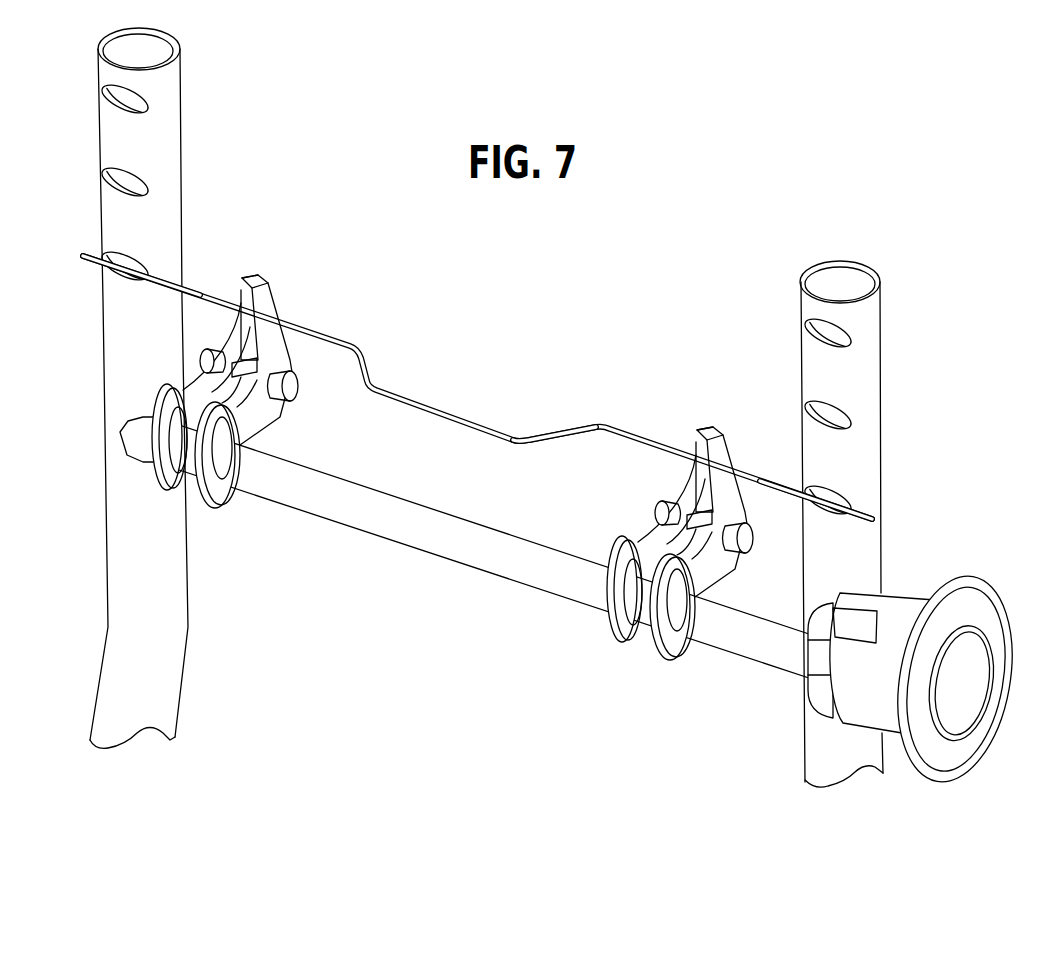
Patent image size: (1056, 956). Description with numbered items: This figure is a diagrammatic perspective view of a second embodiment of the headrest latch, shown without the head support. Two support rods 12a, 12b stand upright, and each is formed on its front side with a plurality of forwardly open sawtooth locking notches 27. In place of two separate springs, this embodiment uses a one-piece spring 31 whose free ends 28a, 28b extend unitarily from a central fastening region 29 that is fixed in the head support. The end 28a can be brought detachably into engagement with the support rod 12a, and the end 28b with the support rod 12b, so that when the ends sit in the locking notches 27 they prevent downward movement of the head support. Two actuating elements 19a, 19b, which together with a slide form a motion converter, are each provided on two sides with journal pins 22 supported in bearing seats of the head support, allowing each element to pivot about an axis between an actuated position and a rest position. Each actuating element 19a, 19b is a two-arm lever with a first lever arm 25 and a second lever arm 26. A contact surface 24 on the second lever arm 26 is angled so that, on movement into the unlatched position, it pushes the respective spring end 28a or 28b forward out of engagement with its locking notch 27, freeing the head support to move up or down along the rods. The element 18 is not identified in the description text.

The support rod 12a is at (804, 745).
The support rod 12b is at (172, 708).
The knob 18 is at (983, 700).
The actuating element 19a is at (672, 542).
The actuating element 19b is at (258, 420).
The journal pin 22 is at (203, 358).
The contact surface 24 is at (268, 305).
The first lever arm 25 is at (229, 512).
The second lever arm 26 is at (262, 272).
The locking notch 27 is at (103, 90).
The free end 28a is at (208, 270).
The free end 28b is at (781, 466).
The central fastening region 29 is at (458, 398).
The one-piece spring 31 is at (556, 432).